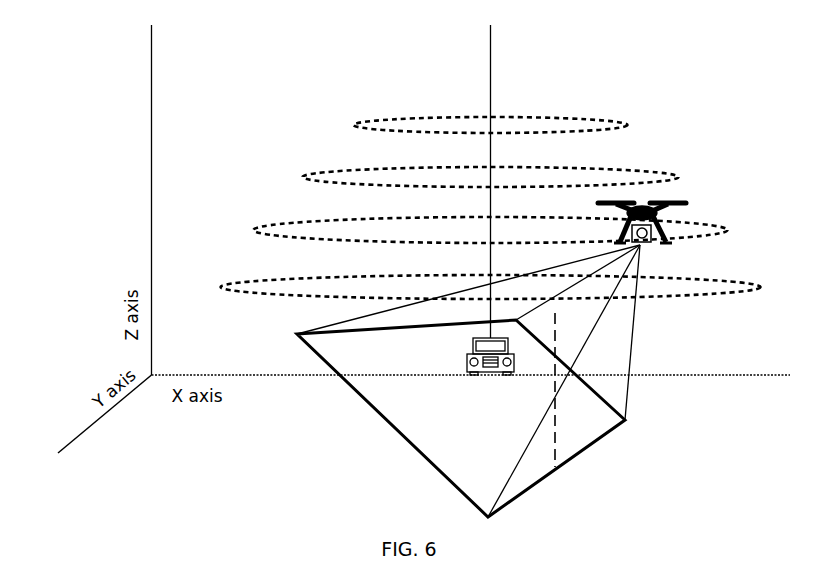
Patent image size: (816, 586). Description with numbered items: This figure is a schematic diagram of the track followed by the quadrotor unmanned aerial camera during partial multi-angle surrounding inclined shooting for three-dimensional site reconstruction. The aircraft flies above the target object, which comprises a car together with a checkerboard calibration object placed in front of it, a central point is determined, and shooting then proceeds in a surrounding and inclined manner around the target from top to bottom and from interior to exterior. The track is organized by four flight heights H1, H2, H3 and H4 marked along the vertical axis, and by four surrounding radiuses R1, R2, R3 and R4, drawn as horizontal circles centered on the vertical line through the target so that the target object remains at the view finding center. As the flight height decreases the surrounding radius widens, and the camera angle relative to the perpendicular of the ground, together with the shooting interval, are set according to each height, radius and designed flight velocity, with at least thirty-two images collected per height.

The first flight height H1 is at (200, 123).
The second flight height H2 is at (200, 177).
The third flight height H3 is at (200, 232).
The fourth flight height H4 is at (200, 287).
The first surrounding radius R1 is at (490, 125).
The second surrounding radius R2 is at (678, 177).
The third surrounding radius R3 is at (490, 231).
The fourth surrounding radius R4 is at (761, 287).